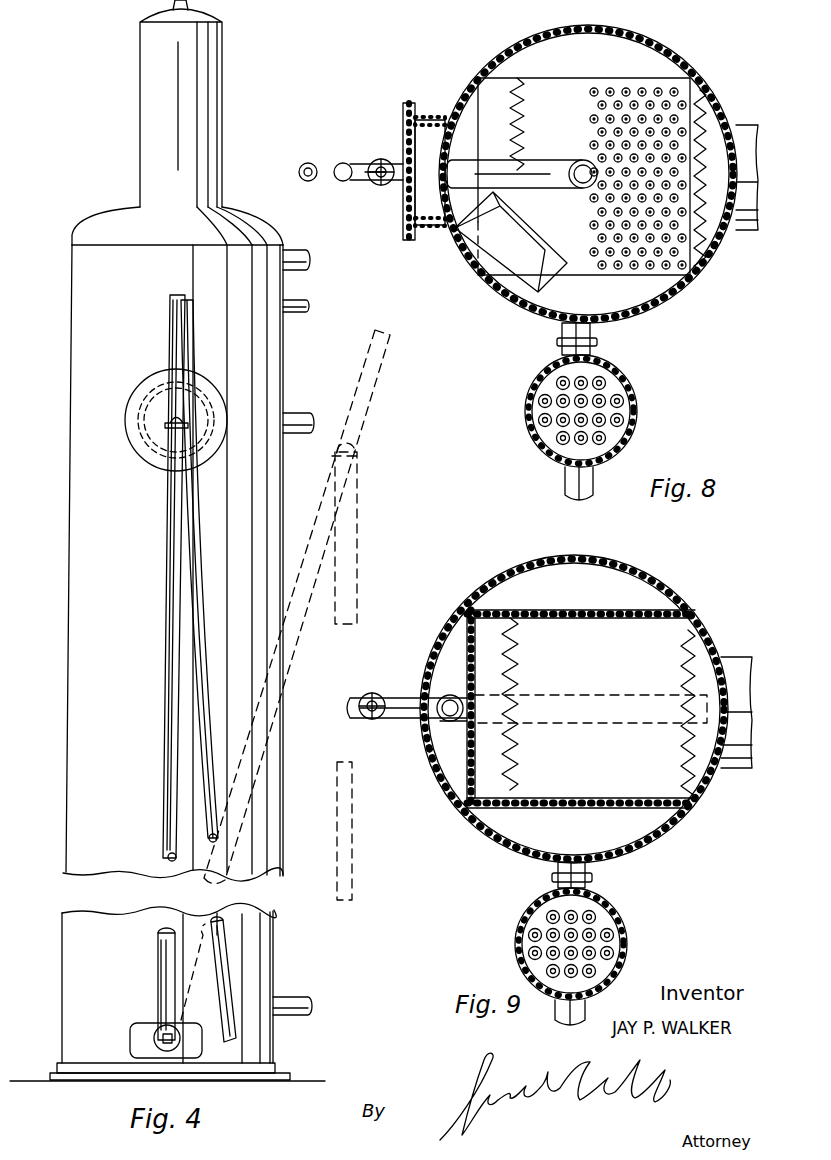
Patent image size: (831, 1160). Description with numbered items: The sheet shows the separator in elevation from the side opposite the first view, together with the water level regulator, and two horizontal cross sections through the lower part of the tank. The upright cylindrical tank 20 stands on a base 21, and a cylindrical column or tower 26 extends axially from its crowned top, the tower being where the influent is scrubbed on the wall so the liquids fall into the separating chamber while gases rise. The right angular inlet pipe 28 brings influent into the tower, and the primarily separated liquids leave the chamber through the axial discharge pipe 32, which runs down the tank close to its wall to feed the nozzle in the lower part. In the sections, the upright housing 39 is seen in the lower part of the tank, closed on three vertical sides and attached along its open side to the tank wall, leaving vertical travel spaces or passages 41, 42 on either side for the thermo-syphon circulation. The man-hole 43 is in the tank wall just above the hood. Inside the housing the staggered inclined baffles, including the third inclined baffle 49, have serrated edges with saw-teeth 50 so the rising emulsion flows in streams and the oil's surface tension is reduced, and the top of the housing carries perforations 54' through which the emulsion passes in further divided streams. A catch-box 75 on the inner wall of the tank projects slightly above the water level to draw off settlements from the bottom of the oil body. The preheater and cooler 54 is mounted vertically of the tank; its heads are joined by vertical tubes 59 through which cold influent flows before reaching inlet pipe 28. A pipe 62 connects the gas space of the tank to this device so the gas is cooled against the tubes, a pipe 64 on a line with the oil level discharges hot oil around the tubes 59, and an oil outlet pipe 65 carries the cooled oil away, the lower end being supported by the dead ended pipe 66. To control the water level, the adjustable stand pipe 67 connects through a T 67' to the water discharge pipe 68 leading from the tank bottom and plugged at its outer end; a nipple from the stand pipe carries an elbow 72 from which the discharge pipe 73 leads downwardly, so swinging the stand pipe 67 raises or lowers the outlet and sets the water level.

In FIG. 4, the upright cylindrical tank 20 is at (88, 330).
In FIG. 8, the upright cylindrical tank 20 is at (500, 45).
In FIG. 9, the upright cylindrical tank 20 is at (500, 580).
In FIG. 4, the base 21 is at (283, 1075).
In FIG. 4, the cylindrical column or tower 26 is at (205, 100).
In FIG. 4, the right angular inlet pipe 28 is at (300, 250).
In FIG. 8, the axial discharge pipe 32 is at (530, 168).
In FIG. 9, the axial discharge pipe 32 is at (440, 724).
In FIG. 9, the upright housing 39 is at (612, 618).
In FIG. 8, the vertical travel space or passage 41 is at (620, 62).
In FIG. 9, the vertical travel space or passage 41 is at (625, 600).
In FIG. 8, the vertical travel space or passage 42 is at (635, 300).
In FIG. 9, the vertical travel space or passage 42 is at (640, 840).
In FIG. 8, the man-hole 43 is at (737, 125).
In FIG. 9, the man-hole 43 is at (733, 657).
In FIG. 9, the third inclined baffle 49 is at (560, 810).
In FIG. 8, the saw-teeth 50 is at (608, 174).
In FIG. 9, the saw-teeth 50 is at (518, 650).
In FIG. 8, the preheater and cooler 54 is at (604, 411).
In FIG. 9, the preheater and cooler 54 is at (542, 944).
In FIG. 8, the perforations 54' is at (621, 178).
In FIG. 8, the vertical tubes 59 is at (562, 405).
In FIG. 9, the vertical tubes 59 is at (590, 935).
In FIG. 4, the pipe 62 is at (298, 312).
In FIG. 4, the pipe 64 is at (300, 433).
In FIG. 8, the oil outlet pipe 65 is at (565, 478).
In FIG. 9, the oil outlet pipe 65 is at (585, 1010).
In FIG. 4, the dead ended pipe 66 is at (292, 997).
In FIG. 8, the dead ended pipe 66 is at (560, 345).
In FIG. 9, the dead ended pipe 66 is at (556, 872).
In FIG. 4, the adjustable stand pipe 67 is at (145, 673).
In FIG. 8, the adjustable stand pipe 67 is at (368, 153).
In FIG. 4, the T 67' is at (146, 1040).
In FIG. 8, the water discharge pipe 68 is at (385, 190).
In FIG. 9, the water discharge pipe 68 is at (395, 697).
In FIG. 4, the elbow 72 is at (183, 418).
In FIG. 4, the discharge pipe 73 is at (194, 605).
In FIG. 8, the discharge pipe 73 is at (312, 160).
In FIG. 8, the catch-box 75 is at (537, 292).